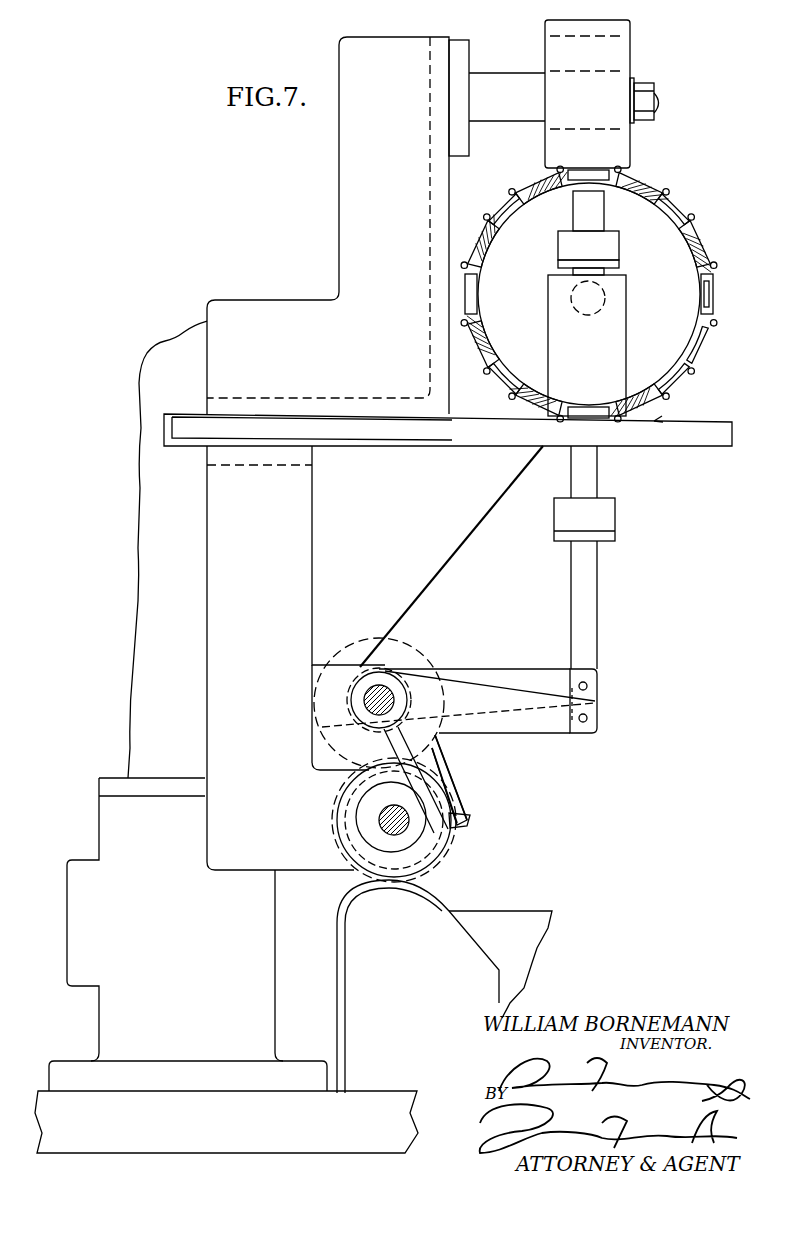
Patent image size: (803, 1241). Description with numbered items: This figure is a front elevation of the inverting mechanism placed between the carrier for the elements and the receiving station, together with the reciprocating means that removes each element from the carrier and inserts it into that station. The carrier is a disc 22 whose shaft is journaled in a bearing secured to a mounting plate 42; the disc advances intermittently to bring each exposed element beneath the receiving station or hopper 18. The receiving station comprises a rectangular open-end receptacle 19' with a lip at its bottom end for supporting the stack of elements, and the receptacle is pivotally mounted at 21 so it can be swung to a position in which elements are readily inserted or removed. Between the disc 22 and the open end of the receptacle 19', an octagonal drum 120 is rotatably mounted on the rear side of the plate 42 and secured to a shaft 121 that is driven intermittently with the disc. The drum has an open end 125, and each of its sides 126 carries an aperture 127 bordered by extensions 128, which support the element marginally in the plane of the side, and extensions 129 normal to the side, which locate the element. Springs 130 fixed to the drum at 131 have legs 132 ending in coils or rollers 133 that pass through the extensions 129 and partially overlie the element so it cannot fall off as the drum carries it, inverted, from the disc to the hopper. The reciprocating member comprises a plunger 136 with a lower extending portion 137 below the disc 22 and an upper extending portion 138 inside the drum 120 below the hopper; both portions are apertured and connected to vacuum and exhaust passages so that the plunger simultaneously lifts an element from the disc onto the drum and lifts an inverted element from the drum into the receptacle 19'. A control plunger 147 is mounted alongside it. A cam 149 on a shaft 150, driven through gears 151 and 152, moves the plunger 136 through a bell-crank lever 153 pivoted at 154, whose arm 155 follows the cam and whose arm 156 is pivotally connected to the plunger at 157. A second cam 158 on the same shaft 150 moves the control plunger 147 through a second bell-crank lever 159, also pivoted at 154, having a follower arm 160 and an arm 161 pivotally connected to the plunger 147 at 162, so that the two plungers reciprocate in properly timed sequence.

The receptacle 19' is at (612, 91).
The pivotal mounting 21 is at (658, 100).
The drum 120 is at (713, 248).
The shaft 121 is at (587, 345).
The open end 125 is at (708, 306).
The sides 126 is at (698, 240).
The aperture 127 is at (680, 228).
The extensions 128 is at (660, 205).
The extensions 129 is at (668, 193).
The springs 130 is at (483, 214).
The fixing point 131 is at (524, 178).
The legs 132 is at (519, 185).
The coils or rollers 133 is at (507, 189).
The upper extending portion 138 is at (603, 214).
The receiving station 18 is at (652, 418).
The disc 22 is at (391, 460).
The mounting plate 42 is at (136, 580).
The lower extending portion 137 is at (597, 470).
The control plunger 147 is at (597, 612).
The gear 152 is at (356, 646).
The pivot 154 is at (385, 685).
The second bell-crank lever 159 is at (470, 660).
The arm 161 is at (510, 673).
The pivotal connection 162 is at (587, 682).
The pivotal connection 157 is at (587, 715).
The bell-crank lever 153 is at (461, 737).
The arm 156 is at (523, 722).
The plunger 136 is at (594, 729).
The cam 149 is at (352, 802).
The gear 151 is at (334, 820).
The follower arm 160 is at (462, 790).
The arm 155 is at (466, 821).
The shaft 150 is at (400, 818).
The cam 158 is at (346, 866).